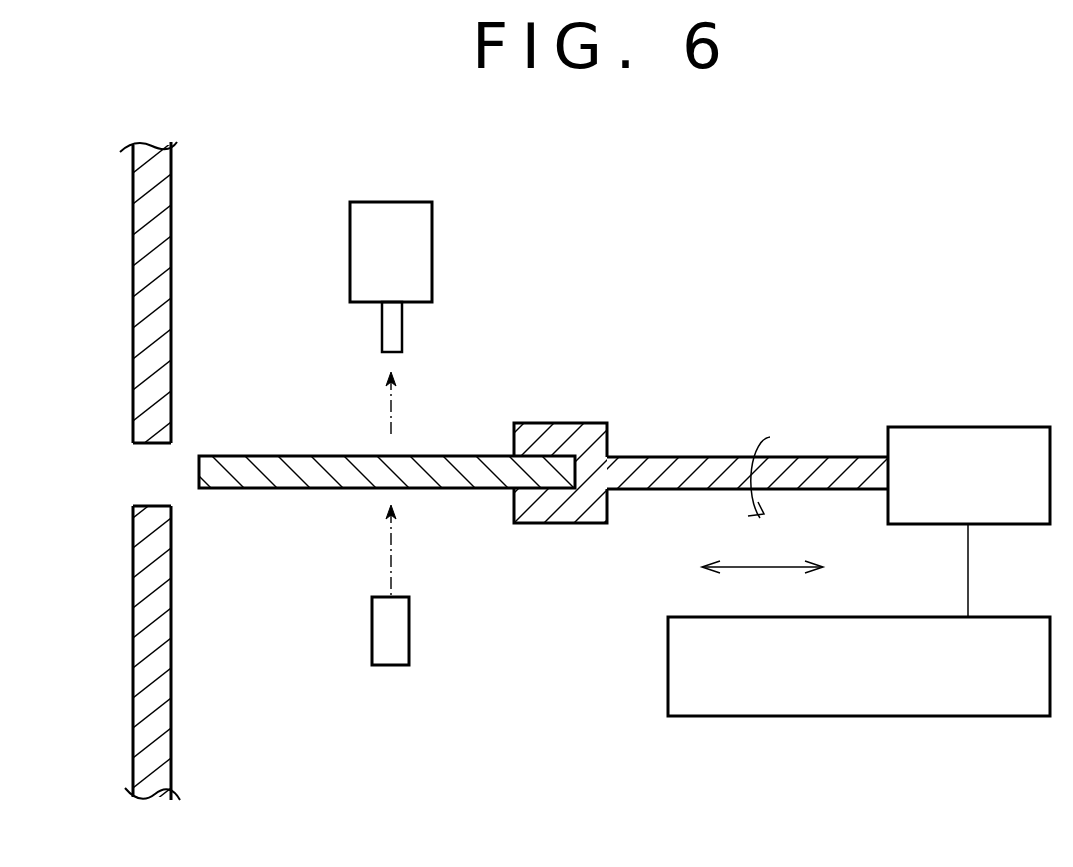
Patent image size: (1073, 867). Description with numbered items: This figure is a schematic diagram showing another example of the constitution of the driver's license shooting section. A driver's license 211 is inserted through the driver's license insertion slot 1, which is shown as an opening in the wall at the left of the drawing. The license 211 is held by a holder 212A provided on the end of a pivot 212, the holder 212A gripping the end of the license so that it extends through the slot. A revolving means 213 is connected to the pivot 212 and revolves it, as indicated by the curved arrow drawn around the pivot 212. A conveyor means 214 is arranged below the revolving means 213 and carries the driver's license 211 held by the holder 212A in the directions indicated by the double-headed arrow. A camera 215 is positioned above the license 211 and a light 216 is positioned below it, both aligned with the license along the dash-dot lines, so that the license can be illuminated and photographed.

The driver's license insertion slot 1 is at (148, 480).
The driver's license 211 is at (437, 457).
The pivot 212 is at (806, 457).
The holder 212A is at (575, 423).
The revolving means 213 is at (975, 427).
The conveyor means 214 is at (860, 617).
The camera 215 is at (393, 202).
The light 216 is at (409, 628).